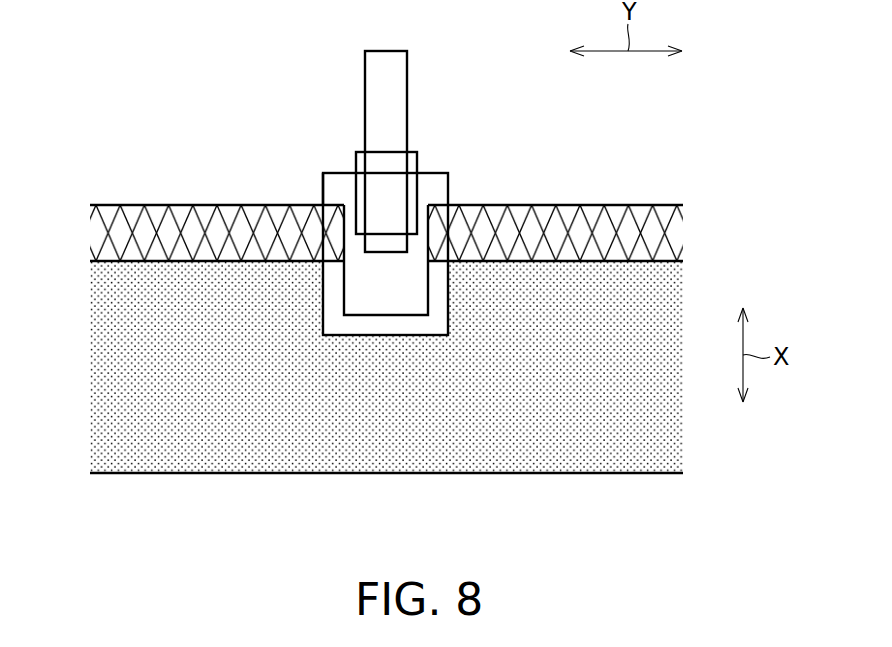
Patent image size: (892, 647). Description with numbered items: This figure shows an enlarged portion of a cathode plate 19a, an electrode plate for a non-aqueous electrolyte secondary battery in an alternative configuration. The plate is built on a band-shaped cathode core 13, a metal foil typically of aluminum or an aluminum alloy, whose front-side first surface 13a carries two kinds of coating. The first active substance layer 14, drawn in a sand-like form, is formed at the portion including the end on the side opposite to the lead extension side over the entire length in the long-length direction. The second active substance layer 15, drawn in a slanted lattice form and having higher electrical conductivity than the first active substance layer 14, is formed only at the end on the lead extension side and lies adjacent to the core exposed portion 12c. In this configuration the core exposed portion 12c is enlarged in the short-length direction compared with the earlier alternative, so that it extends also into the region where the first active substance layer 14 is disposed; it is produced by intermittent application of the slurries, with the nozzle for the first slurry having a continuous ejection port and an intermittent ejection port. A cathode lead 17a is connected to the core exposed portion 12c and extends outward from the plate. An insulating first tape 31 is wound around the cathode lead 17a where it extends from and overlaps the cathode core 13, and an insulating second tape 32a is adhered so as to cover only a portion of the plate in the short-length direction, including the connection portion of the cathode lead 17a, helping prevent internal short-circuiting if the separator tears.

The core exposed portion 12c is at (425, 210).
The cathode core 13 is at (362, 290).
The first surface 13a is at (402, 288).
The first active substance layer 14 is at (598, 450).
The second active substance layer 15 is at (180, 212).
The cathode lead 17a is at (393, 70).
The cathode plate 19a is at (525, 142).
The first tape 31 is at (387, 148).
The second tape 32a is at (323, 186).